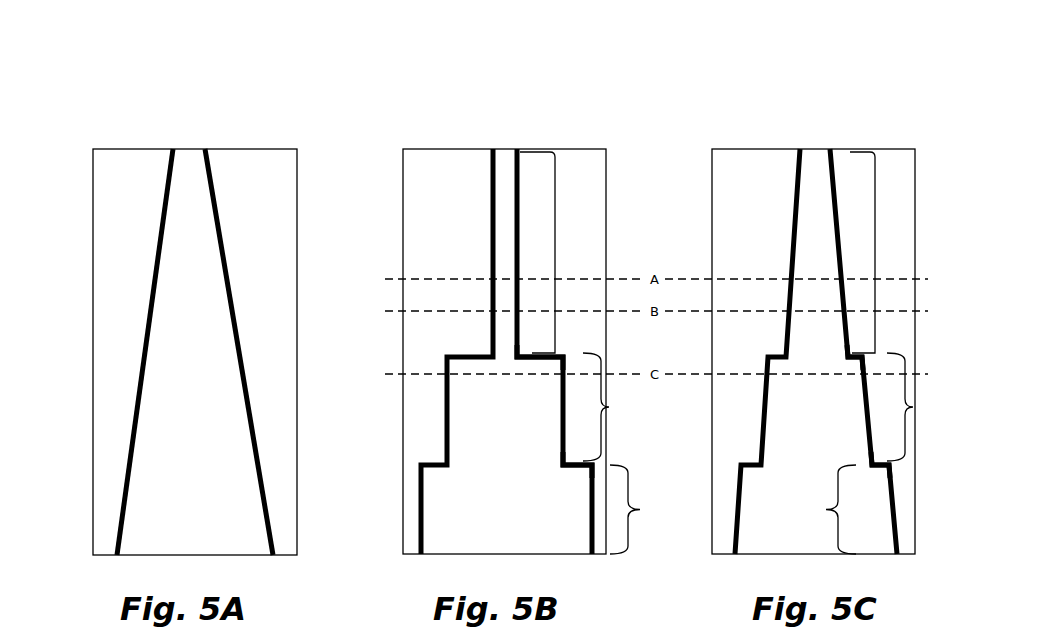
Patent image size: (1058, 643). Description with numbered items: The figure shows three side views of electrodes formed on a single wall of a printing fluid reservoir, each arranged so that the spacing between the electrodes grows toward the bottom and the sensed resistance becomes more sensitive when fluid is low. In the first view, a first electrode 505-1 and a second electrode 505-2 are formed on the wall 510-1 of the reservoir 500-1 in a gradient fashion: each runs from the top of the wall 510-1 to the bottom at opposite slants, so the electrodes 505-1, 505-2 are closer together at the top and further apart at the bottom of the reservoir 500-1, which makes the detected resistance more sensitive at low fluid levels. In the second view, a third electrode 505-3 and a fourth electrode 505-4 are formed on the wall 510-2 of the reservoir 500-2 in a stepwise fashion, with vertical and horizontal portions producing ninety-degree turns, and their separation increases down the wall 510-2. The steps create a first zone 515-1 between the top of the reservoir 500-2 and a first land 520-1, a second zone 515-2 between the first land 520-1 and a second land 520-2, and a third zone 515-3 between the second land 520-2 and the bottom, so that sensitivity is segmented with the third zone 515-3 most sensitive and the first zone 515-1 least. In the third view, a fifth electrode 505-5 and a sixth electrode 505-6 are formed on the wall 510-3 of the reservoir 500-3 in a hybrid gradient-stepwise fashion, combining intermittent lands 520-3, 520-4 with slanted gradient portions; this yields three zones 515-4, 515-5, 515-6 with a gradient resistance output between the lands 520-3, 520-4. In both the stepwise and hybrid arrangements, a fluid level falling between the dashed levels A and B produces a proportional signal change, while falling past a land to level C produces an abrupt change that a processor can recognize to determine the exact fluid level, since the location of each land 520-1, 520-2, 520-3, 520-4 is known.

In FIG. 5A, the reservoir 500-1 is at (184, 304).
In FIG. 5A, the first electrode 505-1 is at (172, 146).
In FIG. 5A, the second electrode 505-2 is at (208, 146).
In FIG. 5A, the wall 510-1 is at (128, 241).
In FIG. 5B, the reservoir 500-2 is at (481, 301).
In FIG. 5B, the third electrode 505-3 is at (491, 146).
In FIG. 5B, the fourth electrode 505-4 is at (520, 146).
In FIG. 5B, the wall 510-2 is at (420, 236).
In FIG. 5B, the first zone 515-1 is at (555, 249).
In FIG. 5B, the second zone 515-2 is at (620, 407).
In FIG. 5B, the third zone 515-3 is at (650, 509).
In FIG. 5B, the first land 520-1 is at (558, 356).
In FIG. 5B, the second land 520-2 is at (590, 462).
In FIG. 5C, the reservoir 500-3 is at (793, 301).
In FIG. 5C, the fifth electrode 505-5 is at (799, 146).
In FIG. 5C, the sixth electrode 505-6 is at (833, 146).
In FIG. 5C, the wall 510-3 is at (727, 231).
In FIG. 5C, the zone 515-4 is at (875, 247).
In FIG. 5C, the zone 515-5 is at (926, 407).
In FIG. 5C, the zone 515-6 is at (817, 509).
In FIG. 5C, the land 520-3 is at (862, 356).
In FIG. 5C, the land 520-4 is at (868, 462).